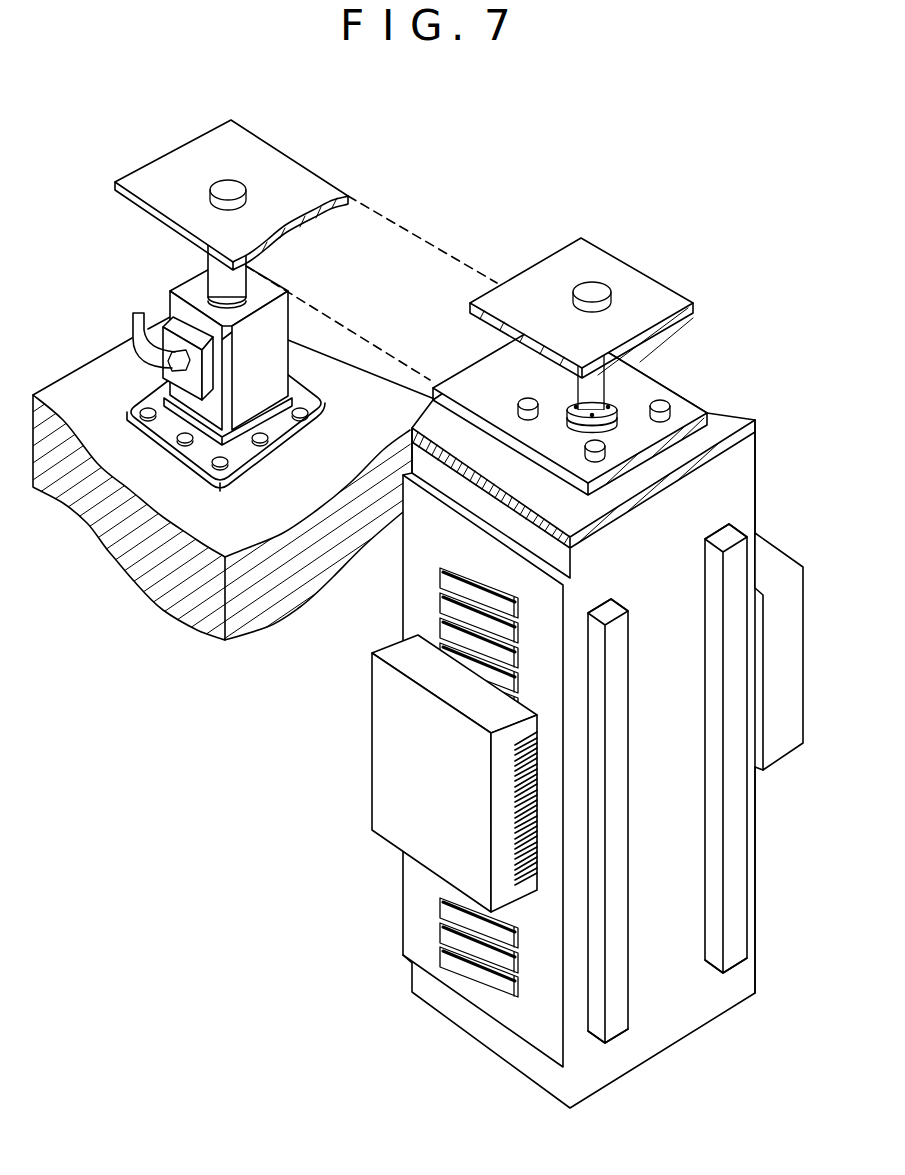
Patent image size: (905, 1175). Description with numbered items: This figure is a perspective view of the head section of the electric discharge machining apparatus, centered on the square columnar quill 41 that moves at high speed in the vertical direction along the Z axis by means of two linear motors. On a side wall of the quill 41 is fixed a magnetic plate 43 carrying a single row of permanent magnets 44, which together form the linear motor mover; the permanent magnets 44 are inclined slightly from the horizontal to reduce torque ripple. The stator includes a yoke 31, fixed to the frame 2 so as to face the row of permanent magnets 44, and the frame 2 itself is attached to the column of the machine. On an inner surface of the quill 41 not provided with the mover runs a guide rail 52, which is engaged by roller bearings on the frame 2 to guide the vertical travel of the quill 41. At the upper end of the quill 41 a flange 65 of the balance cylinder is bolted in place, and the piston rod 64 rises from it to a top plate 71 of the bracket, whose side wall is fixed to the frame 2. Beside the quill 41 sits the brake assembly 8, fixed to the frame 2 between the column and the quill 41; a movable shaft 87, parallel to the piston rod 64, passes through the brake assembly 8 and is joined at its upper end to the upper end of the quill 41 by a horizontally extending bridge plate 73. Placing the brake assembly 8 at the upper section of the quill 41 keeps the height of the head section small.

The frame 2 is at (105, 360).
The brake assembly 8 is at (178, 283).
The movable shaft 87 is at (210, 259).
The bridge plate 73 is at (275, 151).
The top plate 71 is at (622, 265).
The piston rod 64 is at (602, 380).
The flange 65 is at (607, 428).
The quill 41 is at (755, 980).
The magnetic plate 43 is at (403, 596).
The permanent magnets 44 is at (440, 958).
The yoke 31 is at (388, 649).
The guide rail 52 is at (740, 797).